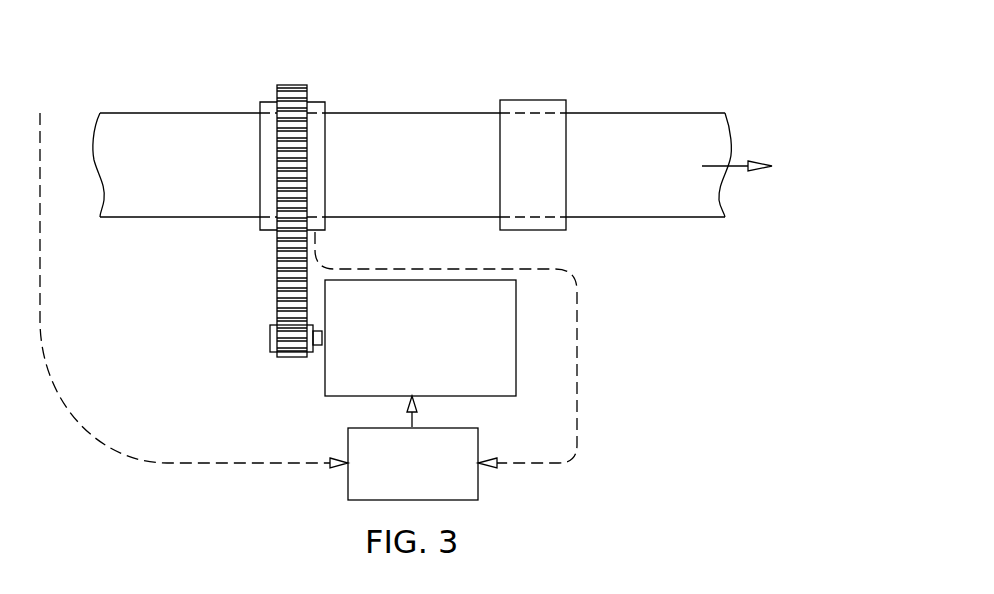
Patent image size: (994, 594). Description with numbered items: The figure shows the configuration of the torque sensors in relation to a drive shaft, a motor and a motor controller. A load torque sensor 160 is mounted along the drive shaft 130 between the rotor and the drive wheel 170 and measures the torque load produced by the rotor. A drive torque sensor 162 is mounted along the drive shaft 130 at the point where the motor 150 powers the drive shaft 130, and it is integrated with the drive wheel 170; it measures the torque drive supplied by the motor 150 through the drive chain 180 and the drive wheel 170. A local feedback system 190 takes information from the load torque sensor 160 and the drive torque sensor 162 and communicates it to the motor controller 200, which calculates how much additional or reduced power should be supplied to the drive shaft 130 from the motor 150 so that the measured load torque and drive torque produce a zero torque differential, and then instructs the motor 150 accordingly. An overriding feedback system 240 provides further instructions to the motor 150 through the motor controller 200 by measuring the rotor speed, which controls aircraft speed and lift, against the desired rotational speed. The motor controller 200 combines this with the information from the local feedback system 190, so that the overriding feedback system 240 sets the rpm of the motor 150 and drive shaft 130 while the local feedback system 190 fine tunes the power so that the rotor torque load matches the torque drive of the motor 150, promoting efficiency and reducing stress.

The drive shaft 130 is at (620, 128).
The motor 150 is at (325, 386).
The load torque sensor 160 is at (548, 123).
The drive torque sensor 162 is at (262, 106).
The drive wheel 170 is at (267, 155).
The drive chain 180 is at (277, 300).
The local feedback system 190 is at (578, 358).
The motor controller 200 is at (467, 440).
The overriding feedback system 240 is at (178, 466).